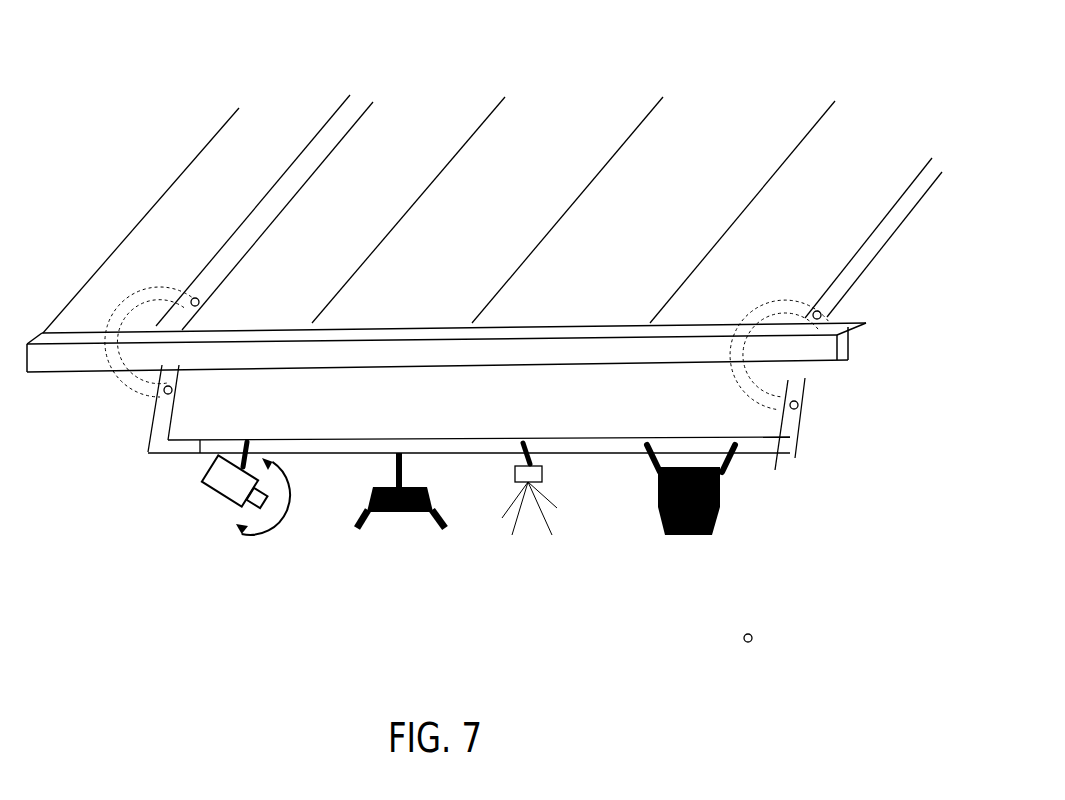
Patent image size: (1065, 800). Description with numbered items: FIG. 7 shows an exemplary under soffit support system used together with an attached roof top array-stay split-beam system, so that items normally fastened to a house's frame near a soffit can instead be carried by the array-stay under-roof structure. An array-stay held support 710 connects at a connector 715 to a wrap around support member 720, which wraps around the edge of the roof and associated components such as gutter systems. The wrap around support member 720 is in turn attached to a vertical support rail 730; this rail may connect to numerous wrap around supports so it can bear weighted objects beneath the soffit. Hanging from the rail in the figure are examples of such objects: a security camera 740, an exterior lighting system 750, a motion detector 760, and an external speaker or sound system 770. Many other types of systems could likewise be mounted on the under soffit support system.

The array-stay held support 710 is at (492, 176).
The connector 715 is at (466, 238).
The wrap around support member 720 is at (446, 281).
The vertical support rail 730 is at (442, 491).
The security camera 740 is at (225, 559).
The exterior lighting system 750 is at (379, 531).
The motion detector 760 is at (501, 532).
The external speaker or sound system 770 is at (665, 555).